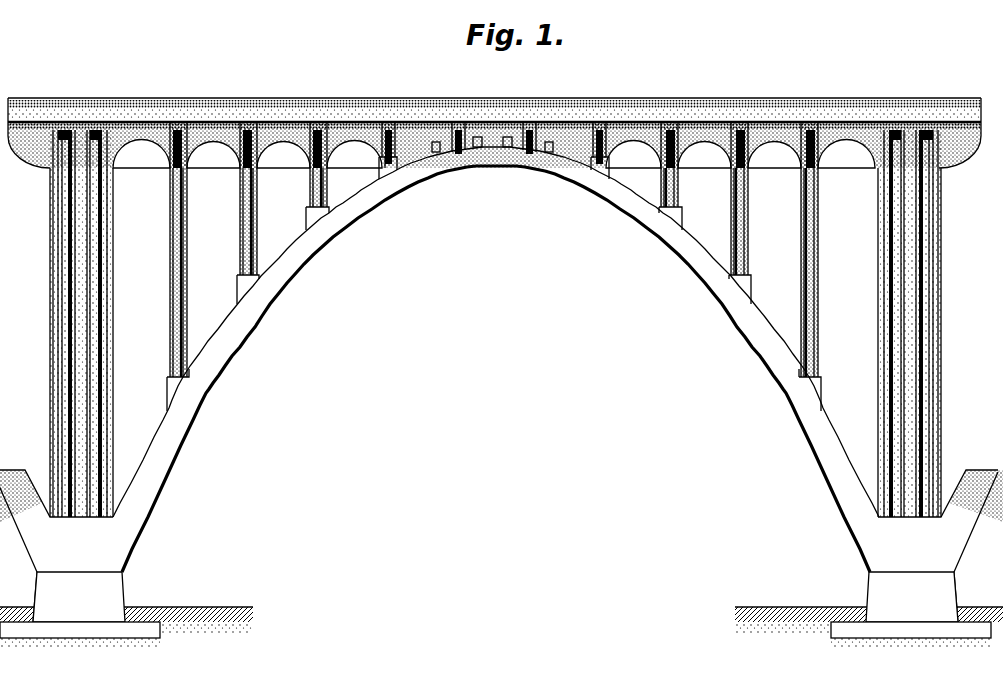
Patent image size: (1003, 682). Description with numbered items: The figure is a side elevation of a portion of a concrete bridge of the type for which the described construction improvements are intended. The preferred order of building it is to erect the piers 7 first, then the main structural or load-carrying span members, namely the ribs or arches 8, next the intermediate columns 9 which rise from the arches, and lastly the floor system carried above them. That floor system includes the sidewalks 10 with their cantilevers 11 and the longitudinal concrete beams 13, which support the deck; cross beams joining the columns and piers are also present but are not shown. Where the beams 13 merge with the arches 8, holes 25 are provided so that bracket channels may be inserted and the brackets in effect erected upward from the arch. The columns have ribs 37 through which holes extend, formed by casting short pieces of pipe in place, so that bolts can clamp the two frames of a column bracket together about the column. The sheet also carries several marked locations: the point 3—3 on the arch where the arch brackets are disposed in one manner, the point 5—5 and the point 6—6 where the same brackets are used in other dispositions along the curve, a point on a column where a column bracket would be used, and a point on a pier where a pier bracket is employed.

The point 3— 3 is at (437, 90).
The point 5— 5 is at (350, 95).
The point 6— 6 is at (284, 95).
The pier 7 is at (58, 342).
The rib or arch 8 is at (235, 334).
The intermediate column 9 is at (238, 255).
The sidewalk 10 is at (770, 99).
The cantilever 11 is at (240, 152).
The longitudinal concrete beam 13 is at (283, 136).
The hole 25 is at (548, 142).
The rib of the column 37 is at (242, 200).